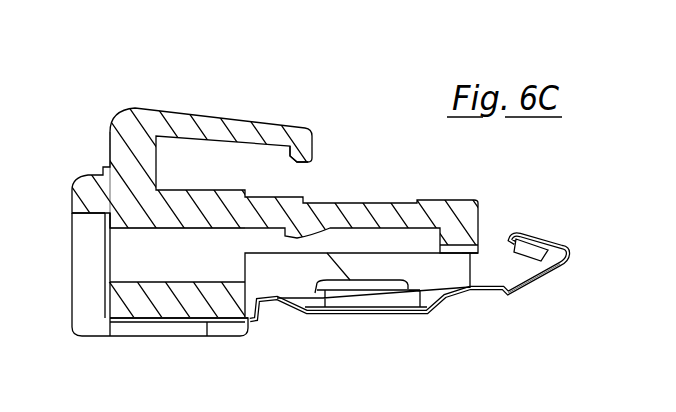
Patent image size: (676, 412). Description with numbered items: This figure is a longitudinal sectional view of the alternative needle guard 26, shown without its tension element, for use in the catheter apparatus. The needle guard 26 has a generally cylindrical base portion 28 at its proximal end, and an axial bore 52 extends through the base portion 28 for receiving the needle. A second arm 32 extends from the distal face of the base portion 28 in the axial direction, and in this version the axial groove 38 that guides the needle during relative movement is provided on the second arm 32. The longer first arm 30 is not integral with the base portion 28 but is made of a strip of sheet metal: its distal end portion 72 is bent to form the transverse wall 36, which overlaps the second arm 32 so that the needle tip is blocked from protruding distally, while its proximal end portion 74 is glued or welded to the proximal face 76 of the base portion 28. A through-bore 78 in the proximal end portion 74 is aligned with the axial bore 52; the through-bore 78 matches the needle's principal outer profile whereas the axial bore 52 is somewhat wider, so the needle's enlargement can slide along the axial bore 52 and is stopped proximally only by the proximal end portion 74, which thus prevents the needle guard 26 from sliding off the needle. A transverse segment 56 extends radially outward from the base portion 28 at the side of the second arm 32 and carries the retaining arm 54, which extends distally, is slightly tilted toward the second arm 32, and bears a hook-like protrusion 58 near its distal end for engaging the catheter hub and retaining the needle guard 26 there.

The needle guard 26 is at (345, 123).
The base portion 28 is at (145, 305).
The first arm 30 is at (380, 313).
The second arm 32 is at (363, 214).
The transverse wall 36 is at (563, 272).
The axial groove 38 is at (463, 250).
The axial bore 52 is at (175, 282).
The retaining arm 54 is at (215, 121).
The transverse segment 56 is at (120, 151).
The hook-like protrusion 58 is at (300, 160).
The distal end portion 72 is at (566, 250).
The proximal end portion 74 is at (105, 308).
The proximal face 76 is at (105, 302).
The through-bore 78 is at (107, 233).